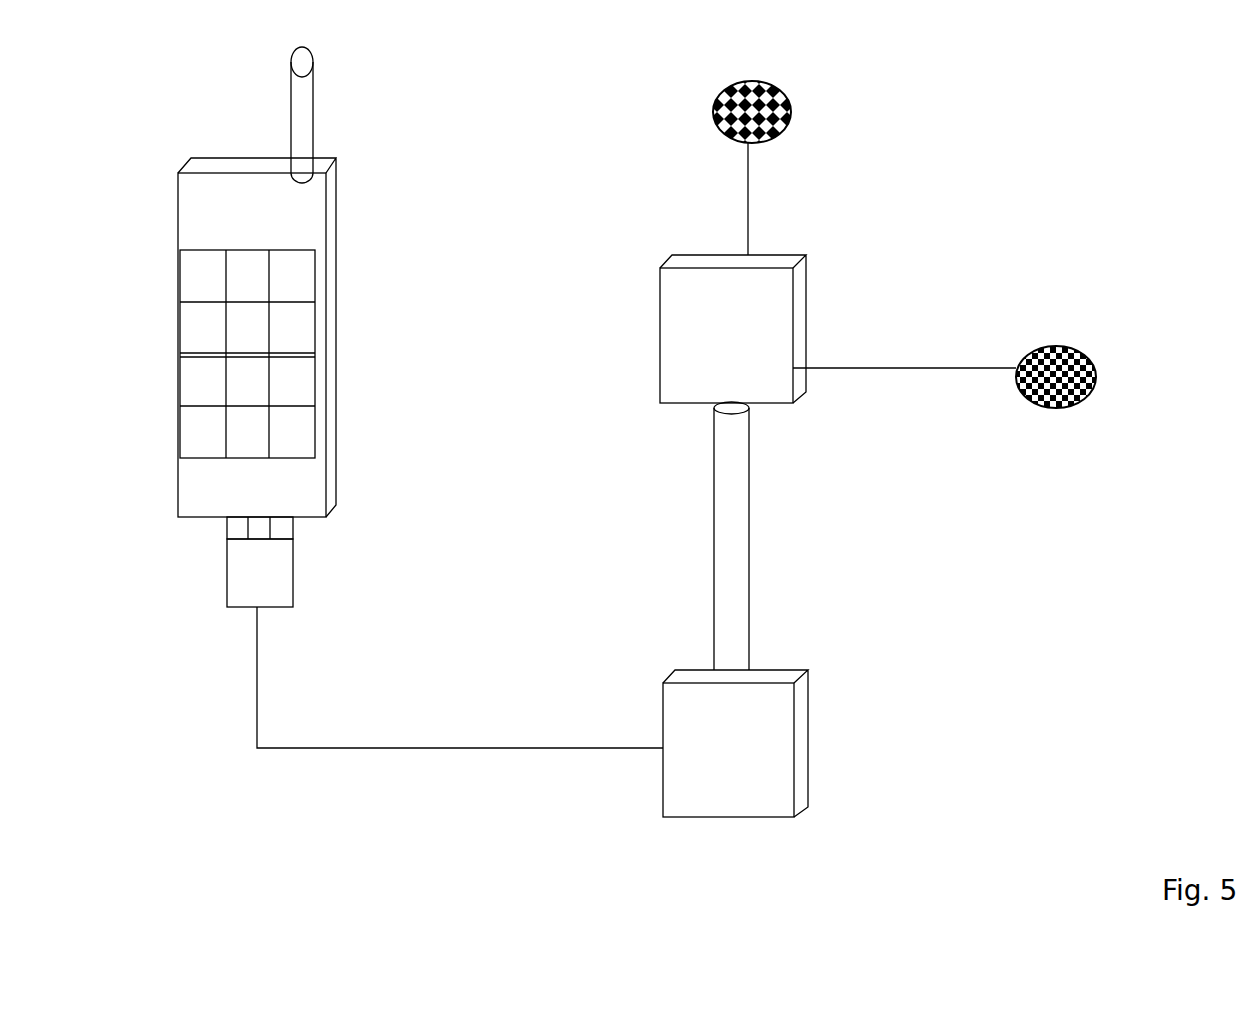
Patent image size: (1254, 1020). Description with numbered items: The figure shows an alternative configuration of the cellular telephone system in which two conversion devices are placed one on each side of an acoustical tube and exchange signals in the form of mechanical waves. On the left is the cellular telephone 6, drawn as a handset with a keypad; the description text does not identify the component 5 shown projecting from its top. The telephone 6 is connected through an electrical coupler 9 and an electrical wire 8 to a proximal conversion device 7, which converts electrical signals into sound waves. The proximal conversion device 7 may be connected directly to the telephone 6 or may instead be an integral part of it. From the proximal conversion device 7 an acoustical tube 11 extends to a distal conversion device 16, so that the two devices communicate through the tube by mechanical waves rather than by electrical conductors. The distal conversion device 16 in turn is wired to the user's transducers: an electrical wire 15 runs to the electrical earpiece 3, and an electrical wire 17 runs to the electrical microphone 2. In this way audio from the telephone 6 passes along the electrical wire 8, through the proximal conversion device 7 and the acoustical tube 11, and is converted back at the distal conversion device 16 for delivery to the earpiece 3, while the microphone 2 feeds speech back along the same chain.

The electrical microphone 2 is at (1097, 408).
The electrical earpiece 3 is at (703, 80).
The antenna 5 is at (337, 92).
The cellular telephone 6 is at (337, 352).
The proximal conversion device 7 is at (832, 747).
The electrical wire 8 is at (452, 748).
The electrical coupler 9 is at (297, 550).
The acoustical tube 11 is at (660, 456).
The electrical wire 15 is at (790, 178).
The distal conversion device 16 is at (807, 410).
The electrical wire 17 is at (940, 333).